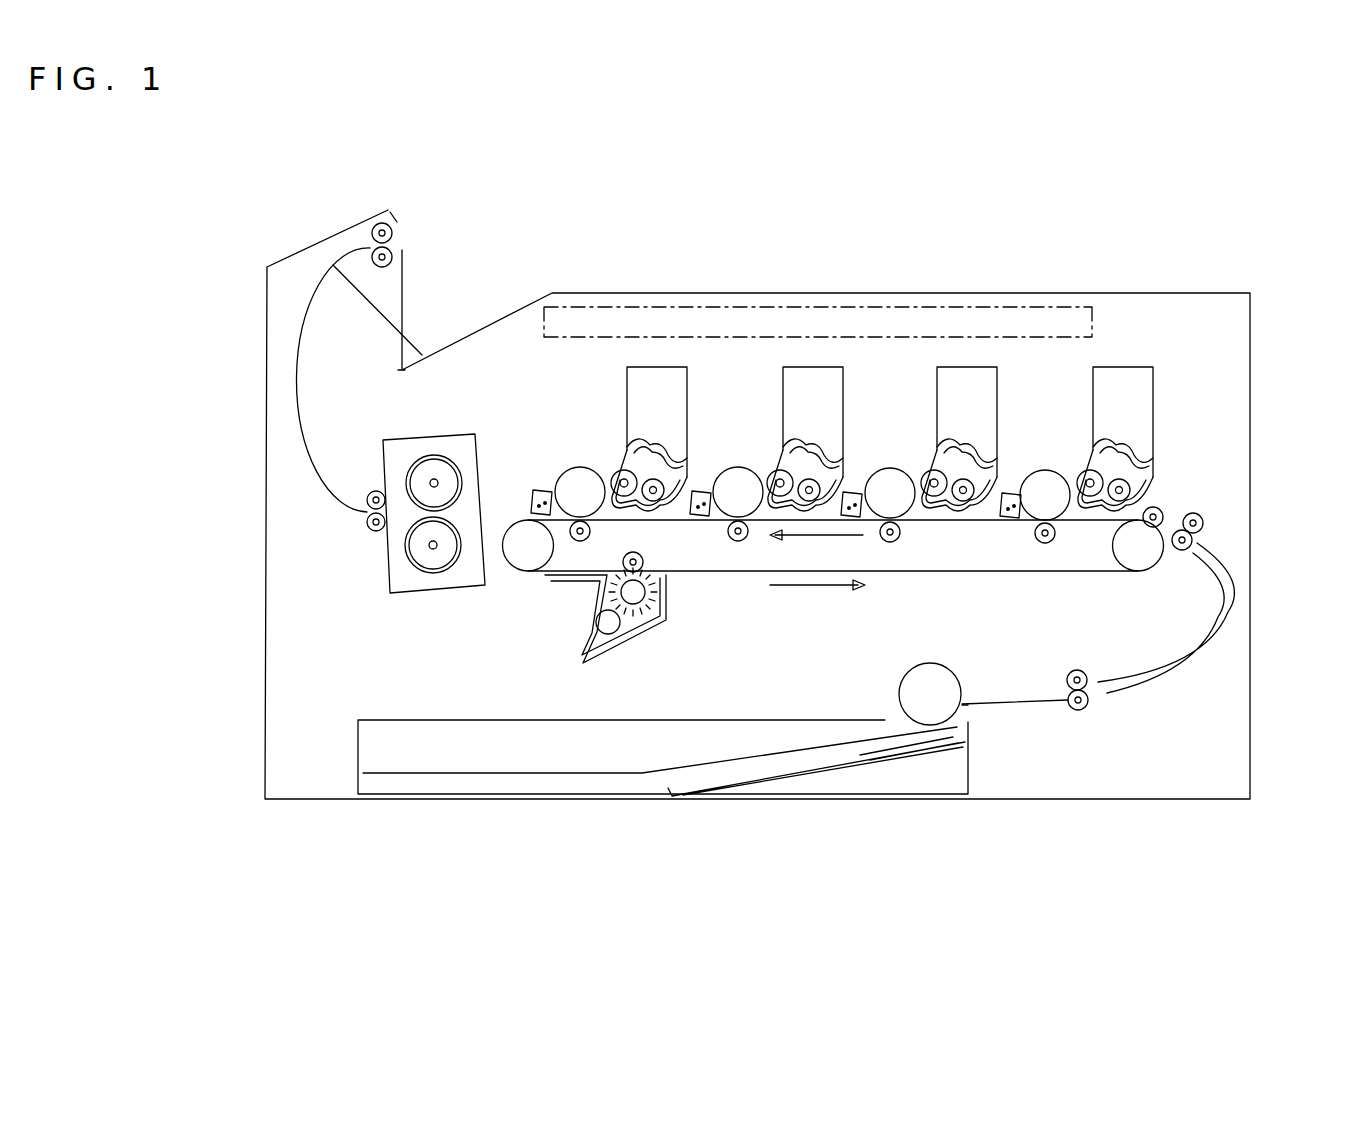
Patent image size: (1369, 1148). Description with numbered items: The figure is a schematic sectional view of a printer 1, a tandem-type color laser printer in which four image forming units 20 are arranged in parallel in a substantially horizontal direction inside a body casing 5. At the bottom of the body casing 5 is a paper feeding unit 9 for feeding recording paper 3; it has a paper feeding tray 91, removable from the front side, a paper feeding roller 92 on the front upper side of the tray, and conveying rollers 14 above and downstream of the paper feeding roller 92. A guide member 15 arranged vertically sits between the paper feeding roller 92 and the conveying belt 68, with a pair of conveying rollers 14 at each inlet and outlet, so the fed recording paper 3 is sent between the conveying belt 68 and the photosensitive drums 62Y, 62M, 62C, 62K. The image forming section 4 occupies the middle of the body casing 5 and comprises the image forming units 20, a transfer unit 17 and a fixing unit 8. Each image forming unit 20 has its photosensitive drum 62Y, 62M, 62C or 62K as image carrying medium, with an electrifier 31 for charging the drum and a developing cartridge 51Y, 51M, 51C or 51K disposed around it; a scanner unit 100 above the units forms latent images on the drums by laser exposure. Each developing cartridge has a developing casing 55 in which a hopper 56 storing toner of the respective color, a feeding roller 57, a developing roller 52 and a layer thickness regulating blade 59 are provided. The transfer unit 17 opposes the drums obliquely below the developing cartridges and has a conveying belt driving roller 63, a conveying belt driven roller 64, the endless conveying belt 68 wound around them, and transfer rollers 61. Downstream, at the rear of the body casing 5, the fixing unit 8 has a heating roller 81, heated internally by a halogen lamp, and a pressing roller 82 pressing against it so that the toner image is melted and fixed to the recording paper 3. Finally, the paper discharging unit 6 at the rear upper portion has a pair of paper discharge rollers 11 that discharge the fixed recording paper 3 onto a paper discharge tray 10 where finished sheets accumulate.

The printer 1 is at (957, 130).
The recording paper 3 is at (655, 780).
The image forming section 4 is at (1177, 371).
The body casing 5 is at (1250, 533).
The paper discharging unit 6 is at (418, 328).
The fixing unit 8 is at (319, 420).
The heating roller 81 is at (422, 480).
The pressing roller 82 is at (440, 530).
The paper feeding unit 9 is at (695, 803).
The paper feeding tray 91 is at (968, 775).
The paper feeding roller 92 is at (943, 703).
The discharge roller 10 is at (333, 265).
The discharge roller 11 is at (382, 222).
The conveying rollers 14 is at (1202, 520).
The guide member 15 is at (1237, 620).
The transfer unit 17 is at (918, 540).
The image forming unit 20 is at (900, 322).
The electrifier 31 is at (533, 493).
The developing cartridge 51K is at (697, 318).
The developing cartridge 51Y is at (913, 372).
The developing cartridge 51C is at (1063, 375).
The developing cartridge 51M is at (1117, 367).
The developing roller 52 is at (580, 487).
The developing casing 55 is at (648, 367).
The hopper 56 is at (667, 460).
The feeding roller 57 is at (688, 482).
The layer thickness regulating blade 59 is at (624, 470).
The transfer rollers 61 is at (1142, 565).
The photosensitive drum 62K is at (537, 490).
The photosensitive drum 62Y is at (708, 490).
The photosensitive drum 62C is at (890, 478).
The photosensitive drum 62M is at (1043, 475).
The conveying belt driving roller 63 is at (527, 555).
The conveying belt driven roller 64 is at (1053, 537).
The conveying belt 68 is at (977, 573).
The scanner unit 100 is at (600, 305).